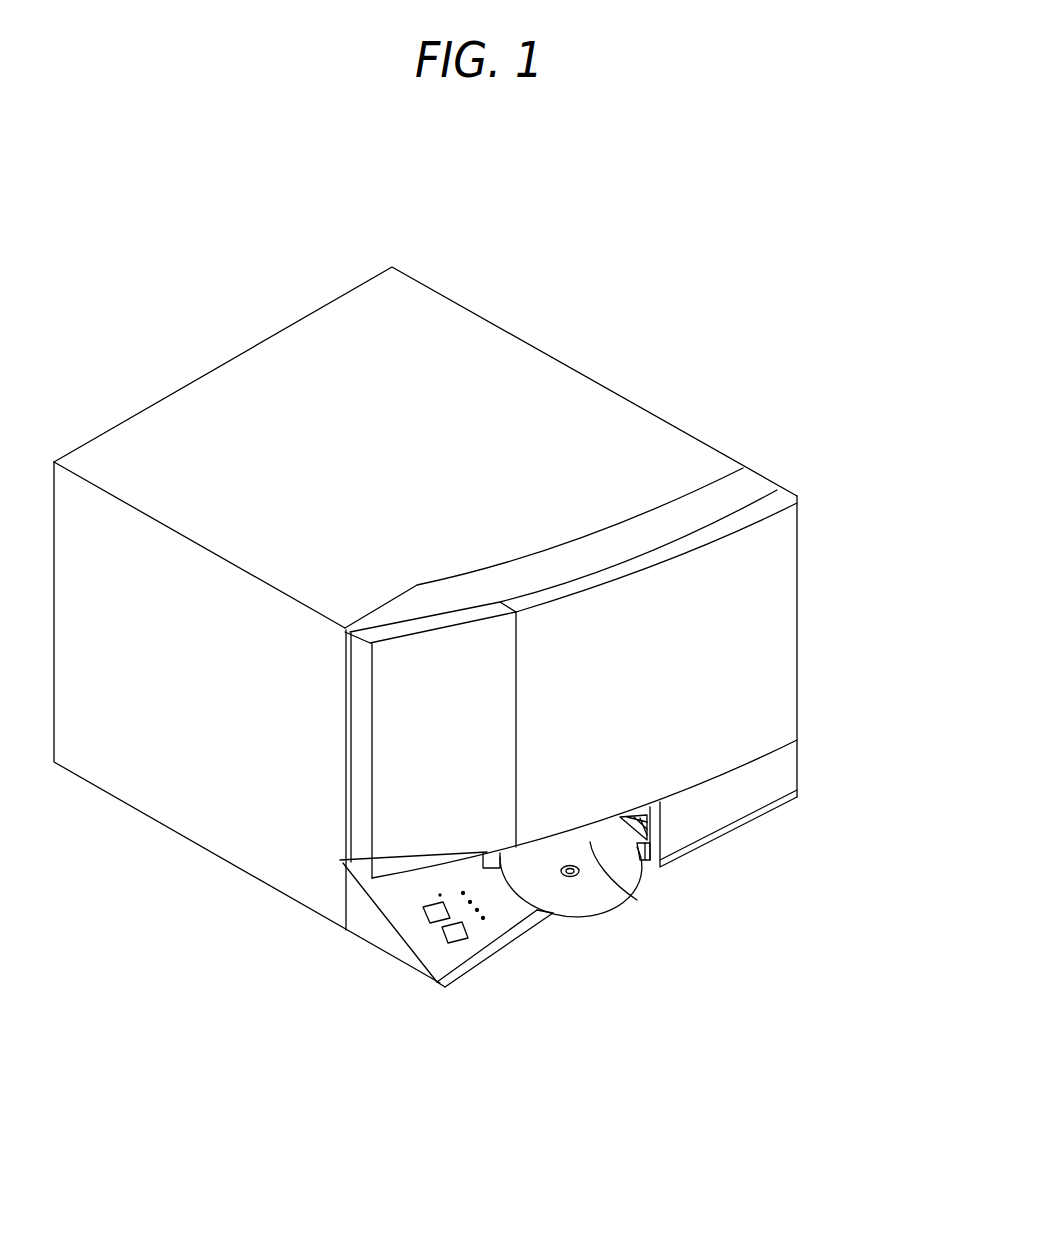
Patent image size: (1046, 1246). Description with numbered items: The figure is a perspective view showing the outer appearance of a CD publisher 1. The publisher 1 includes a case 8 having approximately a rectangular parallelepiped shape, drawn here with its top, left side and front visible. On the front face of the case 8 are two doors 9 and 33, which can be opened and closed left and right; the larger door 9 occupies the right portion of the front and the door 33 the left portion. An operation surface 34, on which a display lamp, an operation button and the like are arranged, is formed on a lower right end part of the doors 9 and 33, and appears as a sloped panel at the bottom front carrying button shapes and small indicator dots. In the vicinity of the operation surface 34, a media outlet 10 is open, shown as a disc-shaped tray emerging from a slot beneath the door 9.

The CD publisher 1 is at (595, 352).
The case 8 is at (328, 303).
The door 9 is at (753, 600).
The media outlet 10 is at (637, 897).
The door 33 is at (397, 817).
The operation surface 34 is at (403, 902).